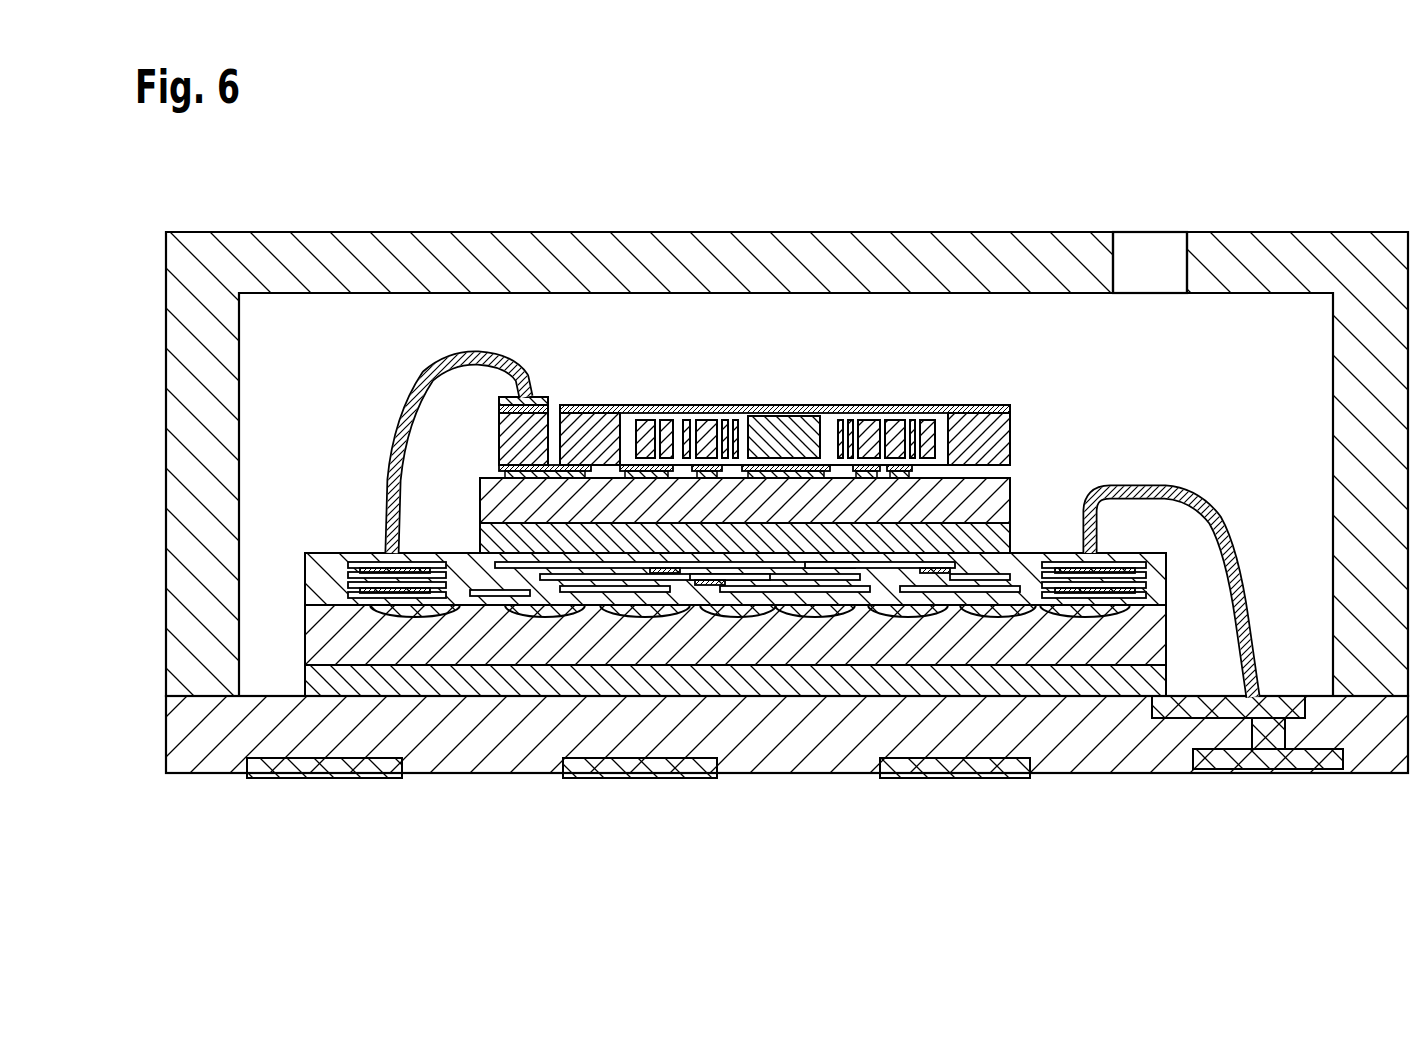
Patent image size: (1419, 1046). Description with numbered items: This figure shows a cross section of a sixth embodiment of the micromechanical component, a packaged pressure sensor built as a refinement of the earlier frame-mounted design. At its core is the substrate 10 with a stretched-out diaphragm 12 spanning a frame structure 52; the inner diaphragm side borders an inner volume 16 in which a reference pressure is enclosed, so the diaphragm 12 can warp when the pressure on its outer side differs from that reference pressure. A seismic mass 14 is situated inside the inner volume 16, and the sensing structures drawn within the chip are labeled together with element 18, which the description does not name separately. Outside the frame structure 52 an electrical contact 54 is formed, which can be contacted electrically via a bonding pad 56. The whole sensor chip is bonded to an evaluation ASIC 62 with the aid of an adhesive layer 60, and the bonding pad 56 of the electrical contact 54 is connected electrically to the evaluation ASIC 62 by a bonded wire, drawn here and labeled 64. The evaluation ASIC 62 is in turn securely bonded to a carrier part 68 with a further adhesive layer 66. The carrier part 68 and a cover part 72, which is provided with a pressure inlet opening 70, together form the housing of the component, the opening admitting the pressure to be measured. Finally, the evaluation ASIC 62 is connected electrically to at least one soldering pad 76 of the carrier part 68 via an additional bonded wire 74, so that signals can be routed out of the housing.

The substrate 10 is at (1002, 504).
The diaphragm 12 is at (880, 425).
The seismic mass 14 is at (932, 430).
The inner volume 16 is at (742, 428).
The seismic mass 18 is at (788, 430).
The frame structure 52 is at (790, 404).
The electrical contact 54 is at (425, 455).
The bonding pad 56 is at (534, 395).
The adhesive layer 60 is at (1002, 538).
The evaluation ASIC 62 is at (305, 553).
The bond wire 64 is at (392, 465).
The further adhesive layer 66 is at (783, 692).
The carrier part 68 is at (475, 748).
The pressure inlet opening 70 is at (1150, 252).
The cover part 72 is at (683, 248).
The bonded wire 74 is at (1186, 492).
The soldering pad 76 is at (985, 770).